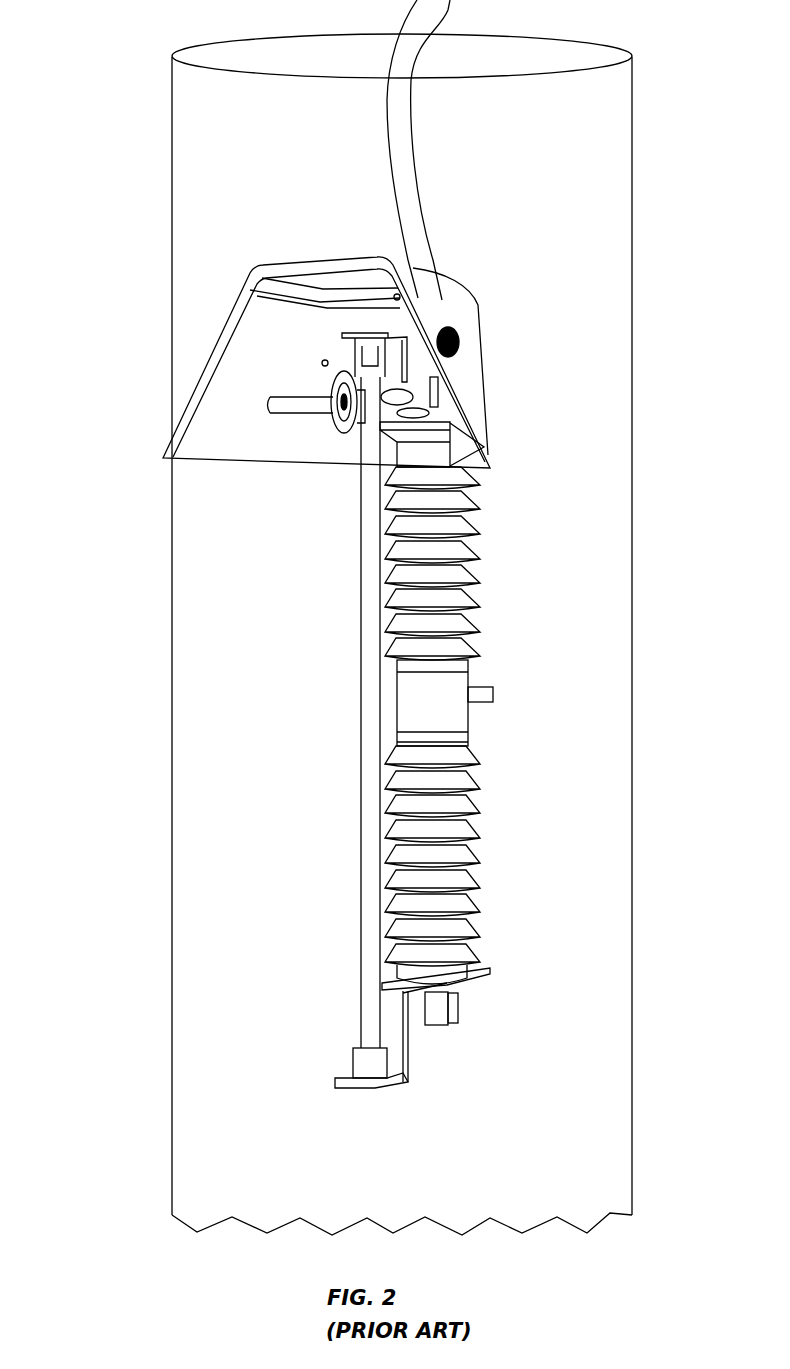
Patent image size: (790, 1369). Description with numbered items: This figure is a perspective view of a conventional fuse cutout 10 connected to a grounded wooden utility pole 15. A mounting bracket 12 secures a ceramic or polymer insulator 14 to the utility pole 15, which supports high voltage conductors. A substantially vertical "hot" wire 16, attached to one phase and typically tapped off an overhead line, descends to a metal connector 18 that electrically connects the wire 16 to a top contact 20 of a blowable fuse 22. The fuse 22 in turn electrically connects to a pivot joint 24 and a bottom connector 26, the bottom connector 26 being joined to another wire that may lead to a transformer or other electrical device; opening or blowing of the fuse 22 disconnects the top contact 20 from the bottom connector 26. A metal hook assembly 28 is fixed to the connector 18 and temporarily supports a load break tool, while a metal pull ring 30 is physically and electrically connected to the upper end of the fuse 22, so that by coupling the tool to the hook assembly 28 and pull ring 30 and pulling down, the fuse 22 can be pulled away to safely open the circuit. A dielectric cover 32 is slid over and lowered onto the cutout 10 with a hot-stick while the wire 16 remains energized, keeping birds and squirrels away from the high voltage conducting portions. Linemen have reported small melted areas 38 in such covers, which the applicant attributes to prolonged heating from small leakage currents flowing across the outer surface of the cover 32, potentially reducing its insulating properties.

The fuse cutout 10 is at (338, 818).
The mounting bracket 12 is at (492, 700).
The insulator 14 is at (483, 560).
The utility pole 15 is at (178, 193).
The wire 16 is at (412, 137).
The connector 18 is at (440, 393).
The top contact 20 is at (342, 328).
The fuse 22 is at (368, 773).
The pivot joint 24 is at (363, 1063).
The bottom connector 26 is at (458, 1008).
The hook assembly 28 is at (307, 395).
The pull ring 30 is at (333, 422).
The dielectric cover 32 is at (330, 263).
The melted areas 38 is at (460, 345).